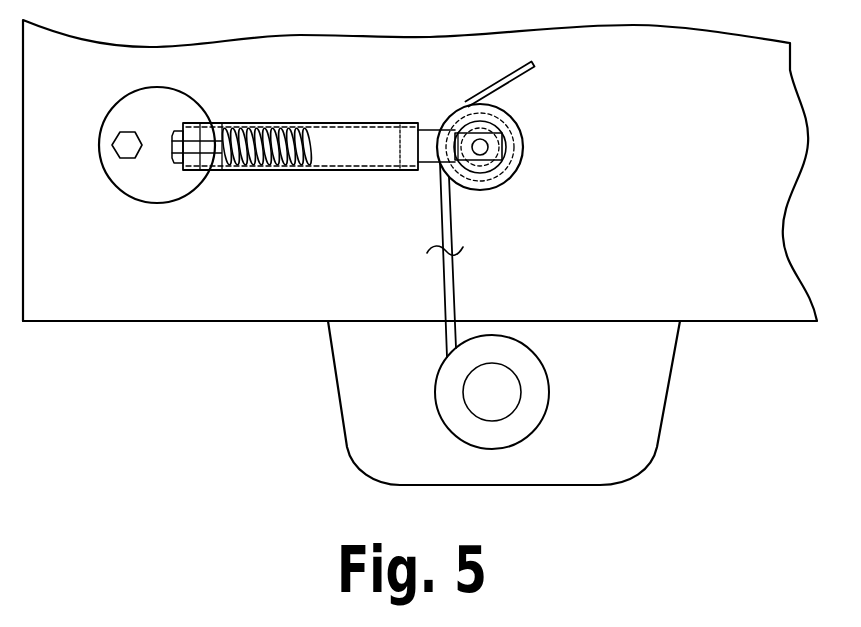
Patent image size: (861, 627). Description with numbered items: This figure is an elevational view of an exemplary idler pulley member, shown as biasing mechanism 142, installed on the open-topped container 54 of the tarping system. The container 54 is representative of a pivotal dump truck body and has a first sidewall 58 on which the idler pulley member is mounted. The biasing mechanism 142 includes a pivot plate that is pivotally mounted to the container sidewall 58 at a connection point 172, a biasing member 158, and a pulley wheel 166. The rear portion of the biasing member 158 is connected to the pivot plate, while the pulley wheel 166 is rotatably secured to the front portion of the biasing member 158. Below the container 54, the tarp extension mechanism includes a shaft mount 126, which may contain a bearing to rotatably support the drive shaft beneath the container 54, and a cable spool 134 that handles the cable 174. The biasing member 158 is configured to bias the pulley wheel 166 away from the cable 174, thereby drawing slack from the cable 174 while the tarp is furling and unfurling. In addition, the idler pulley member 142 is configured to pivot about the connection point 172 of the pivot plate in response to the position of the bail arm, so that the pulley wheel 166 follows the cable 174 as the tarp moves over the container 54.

The container 54 is at (193, 303).
The first sidewall 58 is at (122, 288).
The shaft mount 126 is at (634, 443).
The cable spool 134 is at (454, 407).
The biasing mechanism 142 is at (268, 132).
The biasing member 158 is at (350, 141).
The pulley wheel 166 is at (512, 142).
The connection point 172 is at (122, 145).
The cable 174 is at (498, 84).